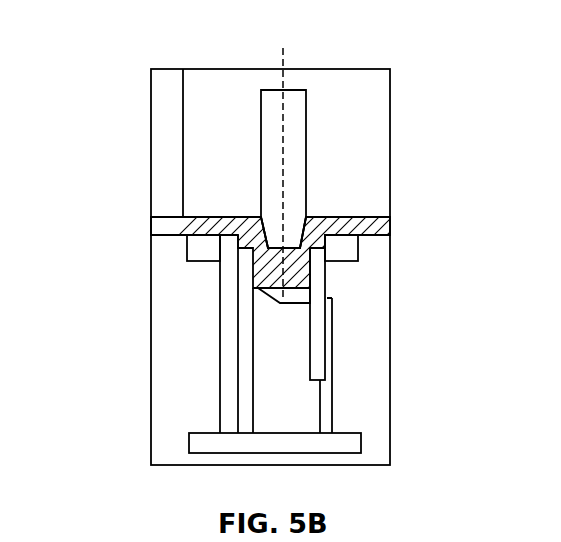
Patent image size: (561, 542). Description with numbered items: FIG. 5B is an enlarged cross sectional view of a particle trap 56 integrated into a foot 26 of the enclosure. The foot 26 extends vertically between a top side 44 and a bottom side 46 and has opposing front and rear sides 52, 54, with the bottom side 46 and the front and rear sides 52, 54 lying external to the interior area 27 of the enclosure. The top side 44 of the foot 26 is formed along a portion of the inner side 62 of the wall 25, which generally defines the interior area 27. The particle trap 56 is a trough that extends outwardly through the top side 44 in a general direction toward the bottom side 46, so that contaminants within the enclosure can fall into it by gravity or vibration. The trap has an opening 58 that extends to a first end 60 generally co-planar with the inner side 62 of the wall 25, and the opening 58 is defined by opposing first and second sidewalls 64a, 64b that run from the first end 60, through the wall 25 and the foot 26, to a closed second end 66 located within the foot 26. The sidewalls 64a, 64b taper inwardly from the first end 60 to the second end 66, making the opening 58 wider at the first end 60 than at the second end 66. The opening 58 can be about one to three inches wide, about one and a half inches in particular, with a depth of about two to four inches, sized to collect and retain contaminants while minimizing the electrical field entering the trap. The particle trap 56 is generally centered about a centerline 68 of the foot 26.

The wall 25 is at (378, 226).
The foot 26 is at (302, 272).
The interior area 27 is at (362, 158).
The top side 44 is at (270, 232).
The bottom side 46 is at (258, 288).
The front side 52 is at (255, 262).
The rear side 54 is at (328, 263).
The particle trap 56 is at (262, 228).
The opening 58 is at (383, 198).
The first end 60 is at (292, 216).
The inner side 62 is at (205, 217).
The first sidewall 64a is at (240, 238).
The second sidewall 64b is at (326, 239).
The second end 66 is at (309, 289).
The centerline 68 is at (280, 148).